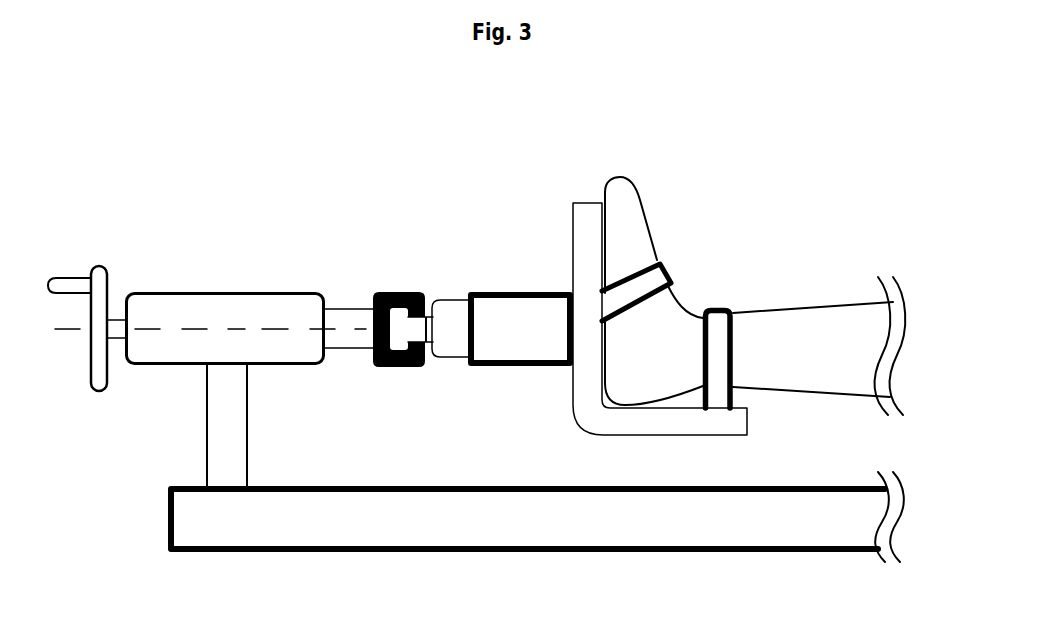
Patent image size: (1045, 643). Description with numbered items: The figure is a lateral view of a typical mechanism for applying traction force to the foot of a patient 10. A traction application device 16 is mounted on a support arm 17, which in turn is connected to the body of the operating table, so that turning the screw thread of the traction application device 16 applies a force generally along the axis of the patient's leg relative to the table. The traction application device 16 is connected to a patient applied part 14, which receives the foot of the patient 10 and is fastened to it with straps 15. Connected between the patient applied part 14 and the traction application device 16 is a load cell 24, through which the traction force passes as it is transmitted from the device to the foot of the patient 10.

The patient 10 is at (869, 320).
The patient applied part 14 is at (588, 280).
The straps 15 is at (660, 277).
The traction application device 16 is at (197, 308).
The support arm 17 is at (383, 520).
The load cell 24 is at (492, 327).